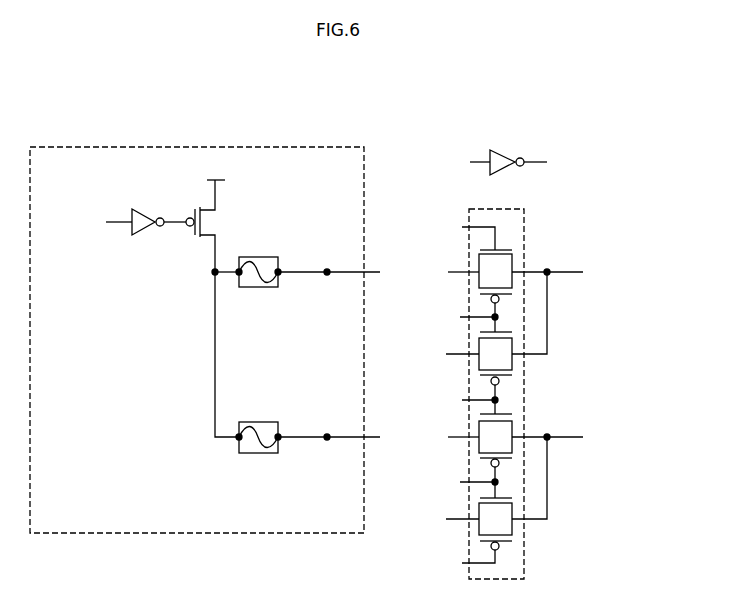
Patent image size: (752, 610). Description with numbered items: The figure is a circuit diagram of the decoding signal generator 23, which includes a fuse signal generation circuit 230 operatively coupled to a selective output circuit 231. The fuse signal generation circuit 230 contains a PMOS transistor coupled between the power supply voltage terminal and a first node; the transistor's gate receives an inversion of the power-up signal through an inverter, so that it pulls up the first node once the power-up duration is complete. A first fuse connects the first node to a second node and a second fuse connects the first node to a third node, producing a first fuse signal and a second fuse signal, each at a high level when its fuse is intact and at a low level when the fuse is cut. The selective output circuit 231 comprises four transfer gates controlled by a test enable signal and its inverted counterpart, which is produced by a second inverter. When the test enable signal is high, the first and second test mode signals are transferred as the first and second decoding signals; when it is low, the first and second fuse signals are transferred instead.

The decoding signal generator 23 is at (522, 81).
The fuse signal generation circuit 230 is at (315, 147).
The selective output circuit 231 is at (526, 220).